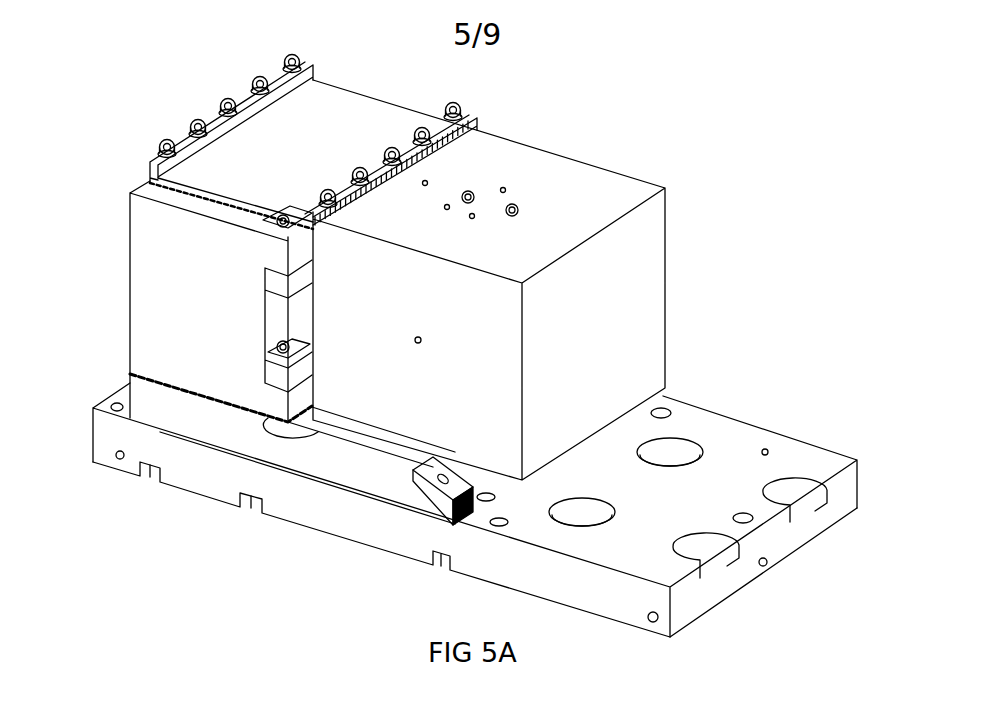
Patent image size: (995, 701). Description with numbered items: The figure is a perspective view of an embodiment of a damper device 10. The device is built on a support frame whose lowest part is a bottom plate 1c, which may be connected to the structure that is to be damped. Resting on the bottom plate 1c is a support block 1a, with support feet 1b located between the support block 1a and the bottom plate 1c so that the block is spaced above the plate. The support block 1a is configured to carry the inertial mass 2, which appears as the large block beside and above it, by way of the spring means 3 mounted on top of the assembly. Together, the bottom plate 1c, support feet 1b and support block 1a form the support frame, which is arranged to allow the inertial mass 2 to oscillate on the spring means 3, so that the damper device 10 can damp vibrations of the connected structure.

The damper device 10 is at (92, 109).
The support block 1a is at (156, 278).
The support feet 1b is at (184, 413).
The bottom plate 1c is at (170, 450).
The inertial mass 2 is at (643, 248).
The spring means 3 is at (331, 128).